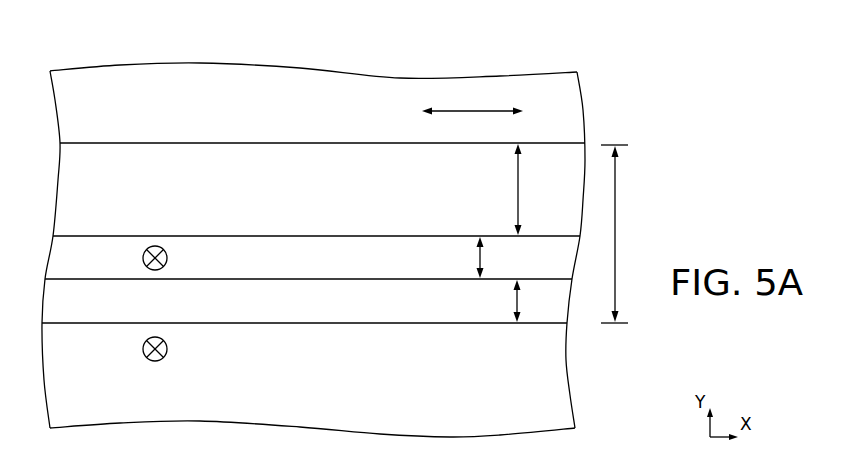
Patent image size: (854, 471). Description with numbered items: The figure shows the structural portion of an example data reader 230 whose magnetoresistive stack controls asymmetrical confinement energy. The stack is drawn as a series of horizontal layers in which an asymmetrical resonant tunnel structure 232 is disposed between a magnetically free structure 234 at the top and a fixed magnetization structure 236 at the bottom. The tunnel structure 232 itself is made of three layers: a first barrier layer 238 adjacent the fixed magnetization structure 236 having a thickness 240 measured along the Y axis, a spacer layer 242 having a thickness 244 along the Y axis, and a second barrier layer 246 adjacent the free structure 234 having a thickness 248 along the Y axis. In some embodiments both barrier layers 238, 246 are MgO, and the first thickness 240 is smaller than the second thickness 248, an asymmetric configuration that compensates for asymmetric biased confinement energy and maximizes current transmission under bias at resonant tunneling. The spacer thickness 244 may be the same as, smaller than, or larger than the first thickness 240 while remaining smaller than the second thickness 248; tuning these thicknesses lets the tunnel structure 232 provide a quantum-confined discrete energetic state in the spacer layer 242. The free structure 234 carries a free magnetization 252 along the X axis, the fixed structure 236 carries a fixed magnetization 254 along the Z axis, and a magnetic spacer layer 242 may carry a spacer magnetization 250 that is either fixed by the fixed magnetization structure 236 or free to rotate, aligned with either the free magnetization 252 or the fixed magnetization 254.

The data reader 230 is at (86, 46).
The magnetically free structure 234 is at (97, 113).
The second barrier layer 246 is at (97, 200).
The spacer layer 242 is at (97, 268).
The first barrier layer 238 is at (97, 310).
The fixed magnetization structure 236 is at (97, 385).
The free magnetization 252 is at (465, 114).
The second barrier layer thickness 248 is at (535, 189).
The spacer layer thickness 244 is at (460, 257).
The first barrier layer thickness 240 is at (534, 301).
The asymmetrical tunnel structure 232 is at (628, 234).
The spacer layer magnetization 250 is at (164, 267).
The fixed magnetization 254 is at (164, 358).